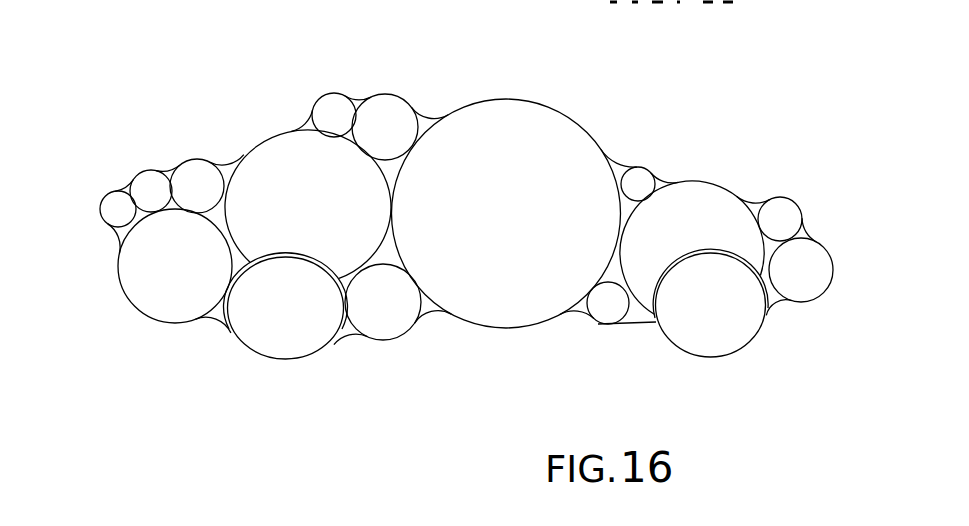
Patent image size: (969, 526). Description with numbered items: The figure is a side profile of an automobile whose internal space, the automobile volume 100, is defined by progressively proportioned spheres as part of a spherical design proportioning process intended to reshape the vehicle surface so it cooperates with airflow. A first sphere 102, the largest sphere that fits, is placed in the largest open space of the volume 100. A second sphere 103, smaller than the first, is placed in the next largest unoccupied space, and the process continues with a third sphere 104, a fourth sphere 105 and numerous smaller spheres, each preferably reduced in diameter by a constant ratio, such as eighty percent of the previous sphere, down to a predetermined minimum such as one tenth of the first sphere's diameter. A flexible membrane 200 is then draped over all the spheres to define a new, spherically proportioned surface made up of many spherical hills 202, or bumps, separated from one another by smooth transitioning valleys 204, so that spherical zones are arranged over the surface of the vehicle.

The automobile volume 100 is at (630, 123).
The first sphere 102 is at (517, 241).
The second sphere 103 is at (317, 220).
The third sphere 104 is at (727, 237).
The fourth sphere 105 is at (197, 286).
The flexible membrane 200 is at (433, 90).
The spherical hills 202 is at (390, 95).
The smooth transitioning valleys 204 is at (355, 97).